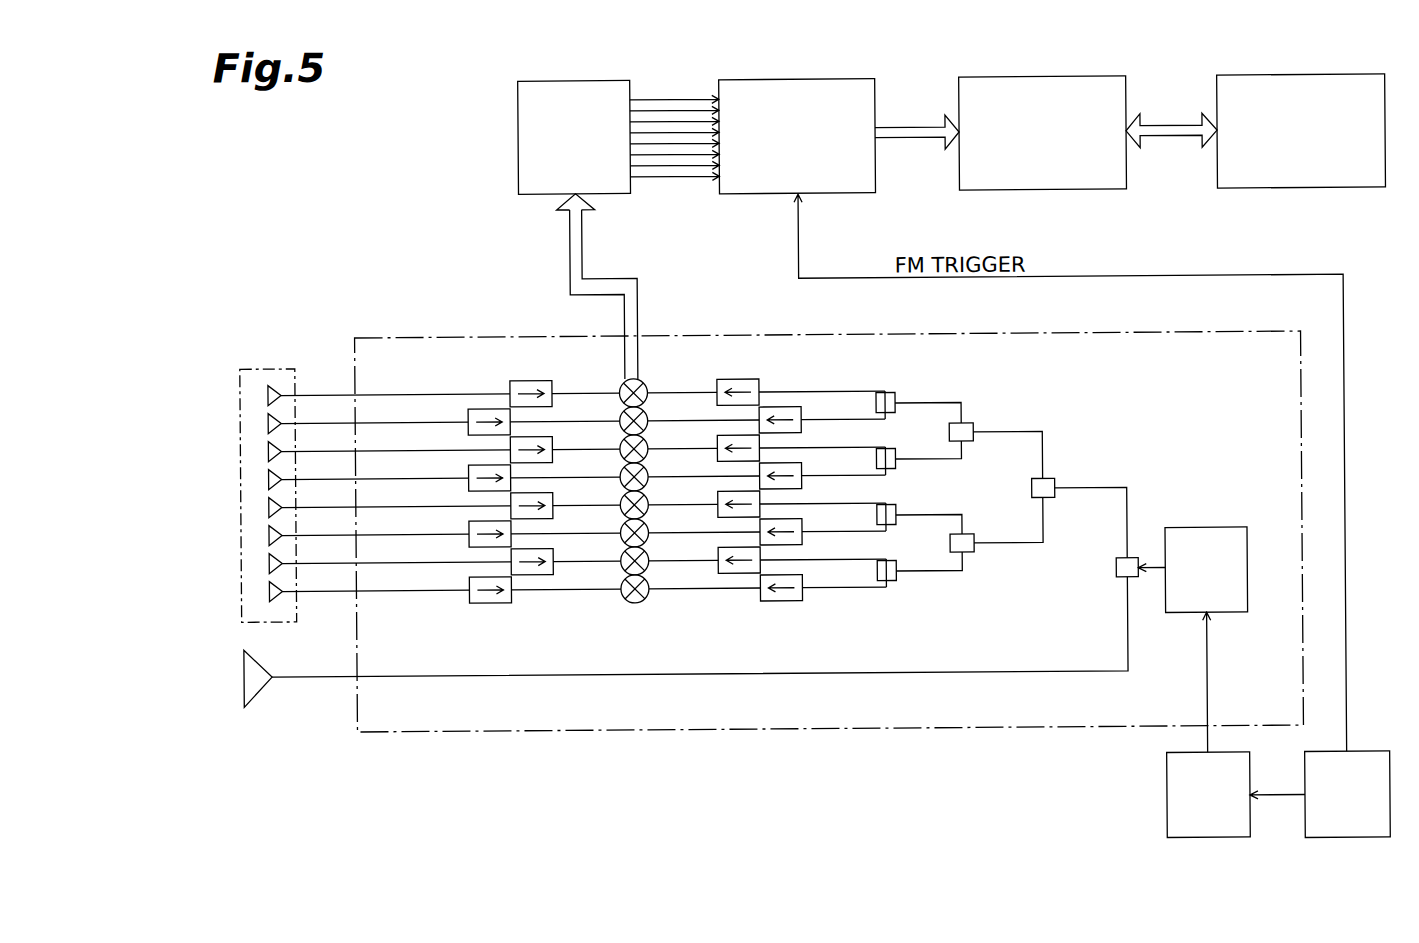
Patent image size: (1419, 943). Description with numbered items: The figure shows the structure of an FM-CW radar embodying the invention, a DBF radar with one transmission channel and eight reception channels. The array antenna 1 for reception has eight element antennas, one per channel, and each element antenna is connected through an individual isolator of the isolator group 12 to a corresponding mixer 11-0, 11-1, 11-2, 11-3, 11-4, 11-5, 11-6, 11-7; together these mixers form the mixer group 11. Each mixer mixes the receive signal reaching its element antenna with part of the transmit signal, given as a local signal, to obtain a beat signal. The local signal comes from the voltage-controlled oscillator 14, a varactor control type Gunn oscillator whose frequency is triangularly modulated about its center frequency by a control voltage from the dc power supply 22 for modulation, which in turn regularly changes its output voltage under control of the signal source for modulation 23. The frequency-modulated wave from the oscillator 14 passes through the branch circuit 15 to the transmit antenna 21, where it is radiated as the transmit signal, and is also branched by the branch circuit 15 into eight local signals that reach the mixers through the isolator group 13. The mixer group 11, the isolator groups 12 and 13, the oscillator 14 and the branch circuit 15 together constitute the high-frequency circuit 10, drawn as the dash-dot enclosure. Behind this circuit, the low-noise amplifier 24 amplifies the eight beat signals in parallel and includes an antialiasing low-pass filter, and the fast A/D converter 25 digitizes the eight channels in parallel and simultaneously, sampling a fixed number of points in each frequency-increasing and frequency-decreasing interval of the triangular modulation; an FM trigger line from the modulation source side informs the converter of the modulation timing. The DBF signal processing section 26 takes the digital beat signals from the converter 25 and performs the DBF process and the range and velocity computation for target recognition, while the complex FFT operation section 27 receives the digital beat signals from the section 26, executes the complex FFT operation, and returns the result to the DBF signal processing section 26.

The array antenna 1 is at (253, 365).
The high-frequency circuit 10 is at (430, 335).
The mixer group 11 is at (655, 512).
The mixer 11-0 is at (649, 386).
The mixer 11-1 is at (649, 414).
The mixer 11-2 is at (649, 442).
The mixer 11-3 is at (649, 470).
The mixer 11-4 is at (649, 498).
The mixer 11-5 is at (649, 526).
The mixer 11-6 is at (649, 554).
The mixer 11-7 is at (606, 618).
The isolator group 12 is at (467, 618).
The isolator group 13 is at (716, 618).
The voltage-controlled oscillator 14 is at (1224, 530).
The branch circuit 15 is at (883, 373).
The transmit antenna 21 is at (261, 688).
The dc power supply for modulation 22 is at (1165, 760).
The signal source for modulation 23 is at (1365, 755).
The low-noise amplifier 24 is at (582, 80).
The fast A/D converter 25 is at (812, 80).
The DBF signal processing section 26 is at (1030, 78).
The complex FFT operation section 27 is at (1278, 78).